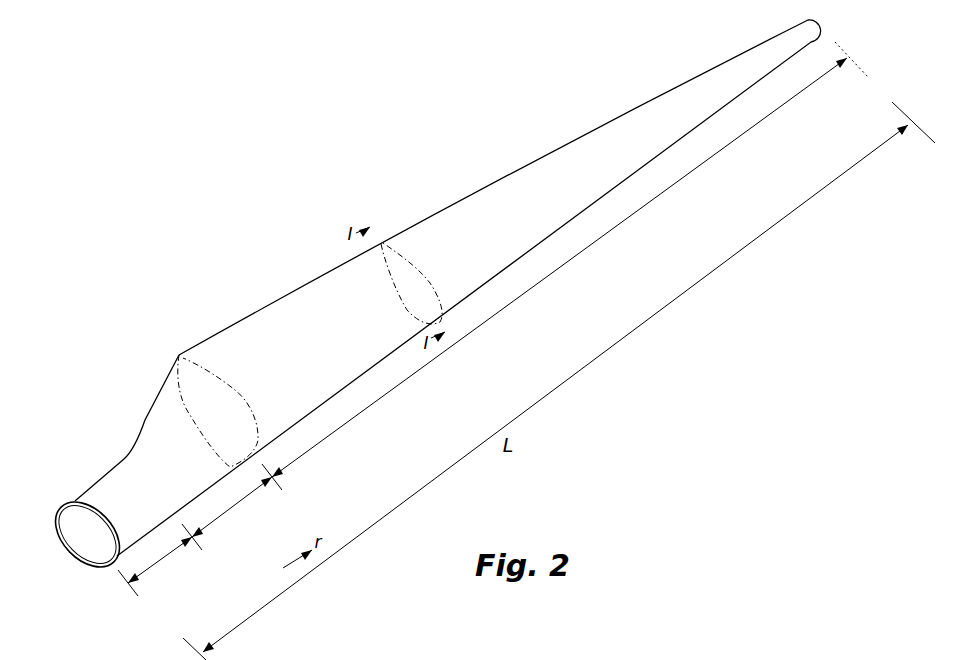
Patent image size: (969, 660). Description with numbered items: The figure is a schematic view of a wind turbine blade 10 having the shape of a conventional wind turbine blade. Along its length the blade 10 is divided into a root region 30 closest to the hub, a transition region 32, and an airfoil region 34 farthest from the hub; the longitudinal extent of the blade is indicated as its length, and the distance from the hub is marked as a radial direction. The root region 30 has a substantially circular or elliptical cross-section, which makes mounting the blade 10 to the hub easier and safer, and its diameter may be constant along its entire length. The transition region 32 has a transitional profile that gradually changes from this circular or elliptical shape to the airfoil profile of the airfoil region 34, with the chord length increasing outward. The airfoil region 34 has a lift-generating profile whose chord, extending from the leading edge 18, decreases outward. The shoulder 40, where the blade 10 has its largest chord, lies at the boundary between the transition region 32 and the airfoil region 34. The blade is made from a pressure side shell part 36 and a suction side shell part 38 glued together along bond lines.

The wind turbine blade 10 is at (302, 192).
The leading edge 18 is at (587, 212).
The root region 30 is at (163, 561).
The transition region 32 is at (233, 506).
The airfoil region 34 is at (503, 308).
The pressure side shell part 36 is at (86, 500).
The suction side shell part 38 is at (62, 517).
The shoulder 40 is at (179, 355).